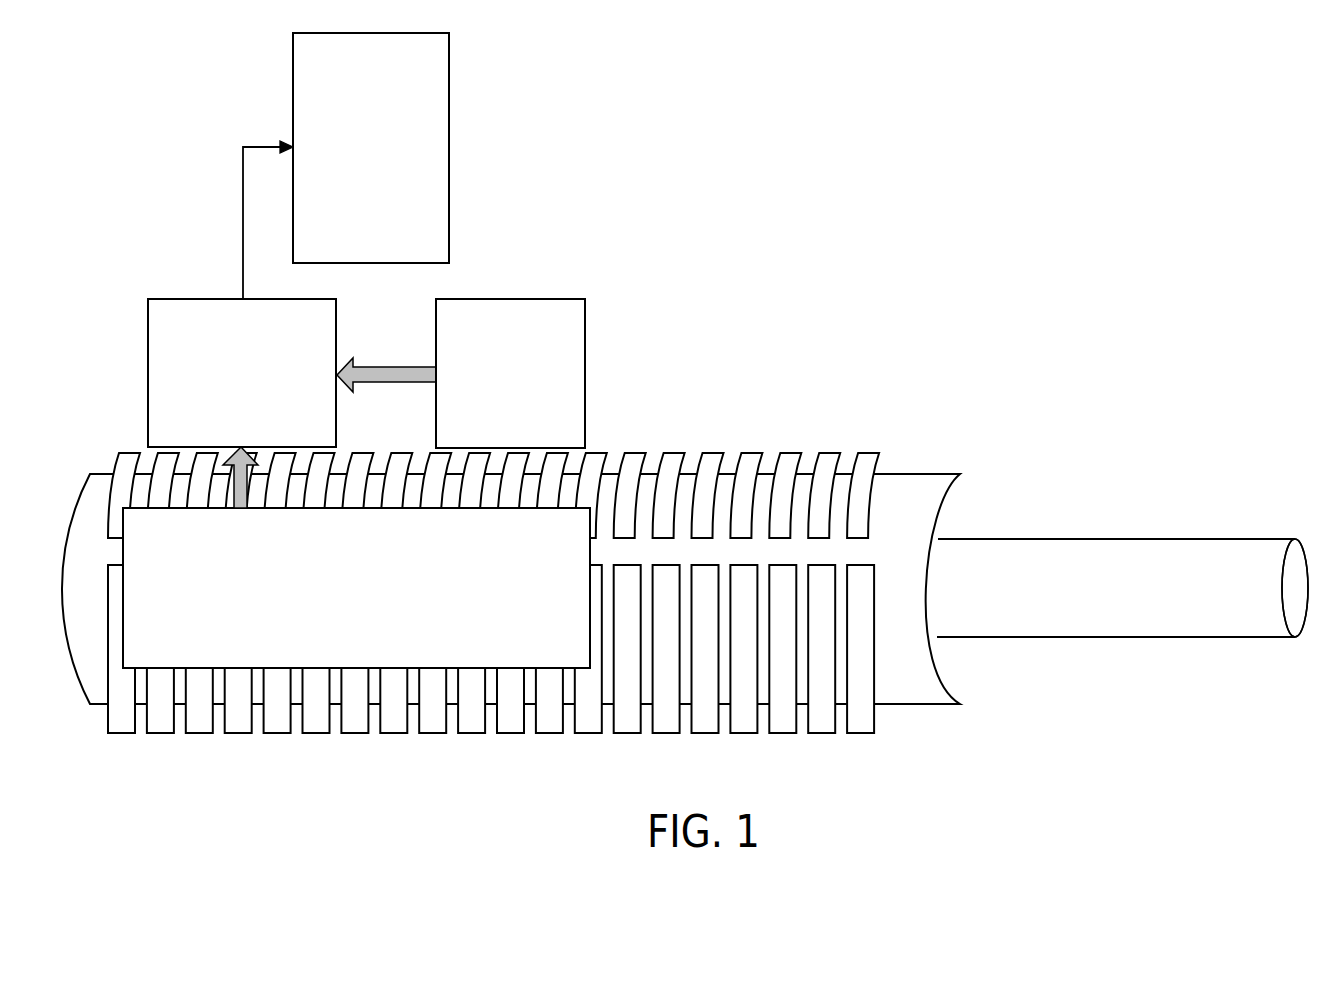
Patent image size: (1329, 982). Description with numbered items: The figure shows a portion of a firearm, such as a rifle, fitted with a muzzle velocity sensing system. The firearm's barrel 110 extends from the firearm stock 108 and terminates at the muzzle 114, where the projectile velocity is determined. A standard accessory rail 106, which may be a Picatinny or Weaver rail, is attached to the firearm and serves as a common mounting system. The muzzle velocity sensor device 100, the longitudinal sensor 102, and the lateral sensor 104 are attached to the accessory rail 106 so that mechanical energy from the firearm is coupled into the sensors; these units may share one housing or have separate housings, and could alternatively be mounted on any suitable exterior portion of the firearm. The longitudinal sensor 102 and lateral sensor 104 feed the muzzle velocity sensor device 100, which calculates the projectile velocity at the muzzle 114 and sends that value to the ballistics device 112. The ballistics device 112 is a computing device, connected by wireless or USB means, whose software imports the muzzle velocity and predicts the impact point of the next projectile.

The muzzle velocity sensor device 100 is at (262, 413).
The longitudinal sensor 102 is at (530, 413).
The lateral sensor 104 is at (375, 613).
The accessory rail 106 is at (672, 454).
The firearm stock 108 is at (910, 485).
The barrel 110 is at (1100, 638).
The ballistics device 112 is at (390, 187).
The muzzle 114 is at (1295, 638).